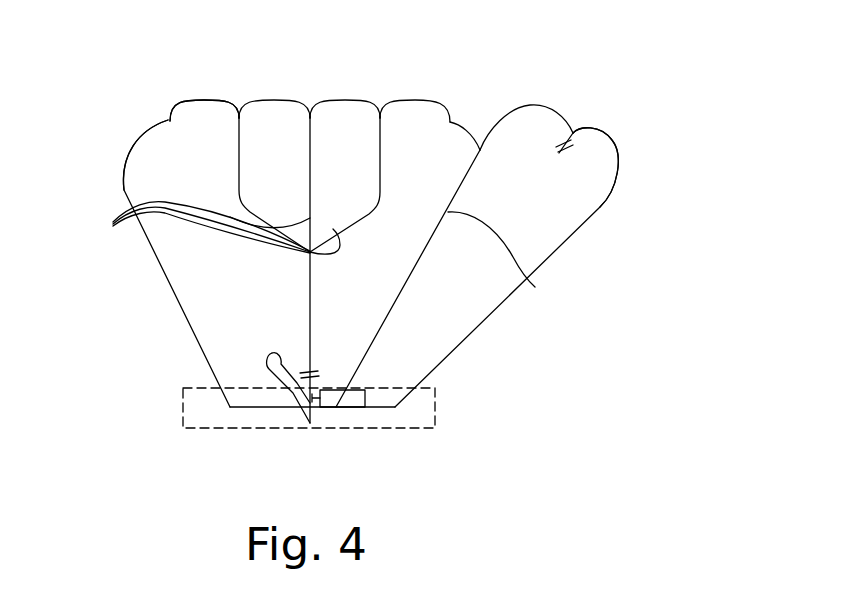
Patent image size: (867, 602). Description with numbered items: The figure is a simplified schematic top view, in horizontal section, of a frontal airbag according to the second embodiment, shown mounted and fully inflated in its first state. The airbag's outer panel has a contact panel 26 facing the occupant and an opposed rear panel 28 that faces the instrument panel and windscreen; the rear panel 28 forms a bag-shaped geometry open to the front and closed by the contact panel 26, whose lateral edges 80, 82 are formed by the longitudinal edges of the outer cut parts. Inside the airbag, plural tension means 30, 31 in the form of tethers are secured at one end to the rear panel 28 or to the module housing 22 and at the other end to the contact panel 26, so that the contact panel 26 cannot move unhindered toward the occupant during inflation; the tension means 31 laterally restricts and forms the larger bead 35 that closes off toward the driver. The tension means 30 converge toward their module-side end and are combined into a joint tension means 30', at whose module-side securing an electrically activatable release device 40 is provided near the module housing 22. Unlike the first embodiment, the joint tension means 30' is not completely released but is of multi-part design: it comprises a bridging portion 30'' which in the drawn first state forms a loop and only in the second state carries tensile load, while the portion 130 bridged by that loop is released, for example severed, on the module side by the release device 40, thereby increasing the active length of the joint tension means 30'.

The contact panel 26 is at (458, 92).
The lateral edge 80 is at (168, 120).
The tension means 30 is at (211, 228).
The joint tension means 30' is at (194, 311).
The bridging portion 30'' is at (171, 373).
The bridged portion 130 is at (303, 398).
The rear panel 28 is at (598, 210).
The larger bead 35 is at (593, 145).
The lateral edge 82 is at (573, 130).
The tension means 31 is at (535, 287).
The release device 40 is at (350, 402).
The module housing 22 is at (435, 410).